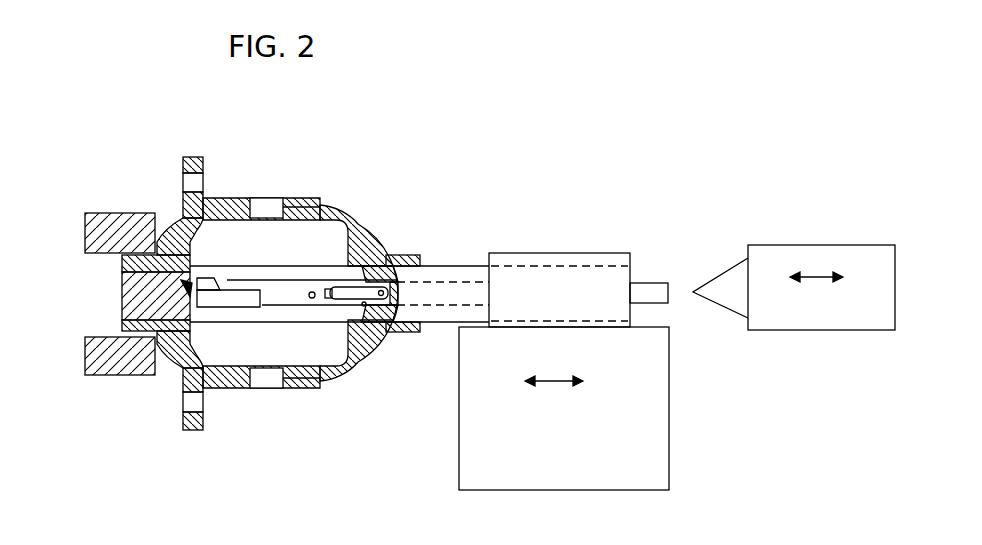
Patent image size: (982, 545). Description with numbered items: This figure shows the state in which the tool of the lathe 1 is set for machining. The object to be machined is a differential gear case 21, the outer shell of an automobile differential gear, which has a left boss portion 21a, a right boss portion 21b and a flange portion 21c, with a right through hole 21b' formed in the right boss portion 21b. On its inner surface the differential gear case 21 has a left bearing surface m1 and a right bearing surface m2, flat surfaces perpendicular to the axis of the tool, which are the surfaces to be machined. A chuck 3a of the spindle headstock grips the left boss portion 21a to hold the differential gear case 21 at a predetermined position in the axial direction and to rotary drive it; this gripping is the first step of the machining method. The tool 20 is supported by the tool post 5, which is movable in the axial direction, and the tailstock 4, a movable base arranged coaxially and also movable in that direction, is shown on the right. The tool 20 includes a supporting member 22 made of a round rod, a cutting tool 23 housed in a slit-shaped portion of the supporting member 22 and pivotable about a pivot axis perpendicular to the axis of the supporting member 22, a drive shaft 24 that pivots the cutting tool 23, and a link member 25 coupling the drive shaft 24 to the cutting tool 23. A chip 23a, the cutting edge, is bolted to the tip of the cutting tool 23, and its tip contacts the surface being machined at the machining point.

The lathe 1 is at (658, 206).
The chuck 3a is at (100, 213).
The tailstock 4 is at (818, 245).
The tool post 5 is at (557, 252).
The tool 20 is at (322, 265).
The differential gear case 21 is at (297, 198).
The left boss portion 21a is at (125, 255).
The right boss portion 21b is at (420, 259).
The right through hole 21b' is at (465, 259).
The flange portion 21c is at (193, 157).
The supporting member 22 is at (122, 272).
The cutting tool 23 is at (288, 306).
The chip 23a is at (185, 292).
The drive shaft 24 is at (445, 305).
The link member 25 is at (365, 308).
The left bearing surface m1 is at (185, 373).
The right bearing surface m2 is at (340, 348).